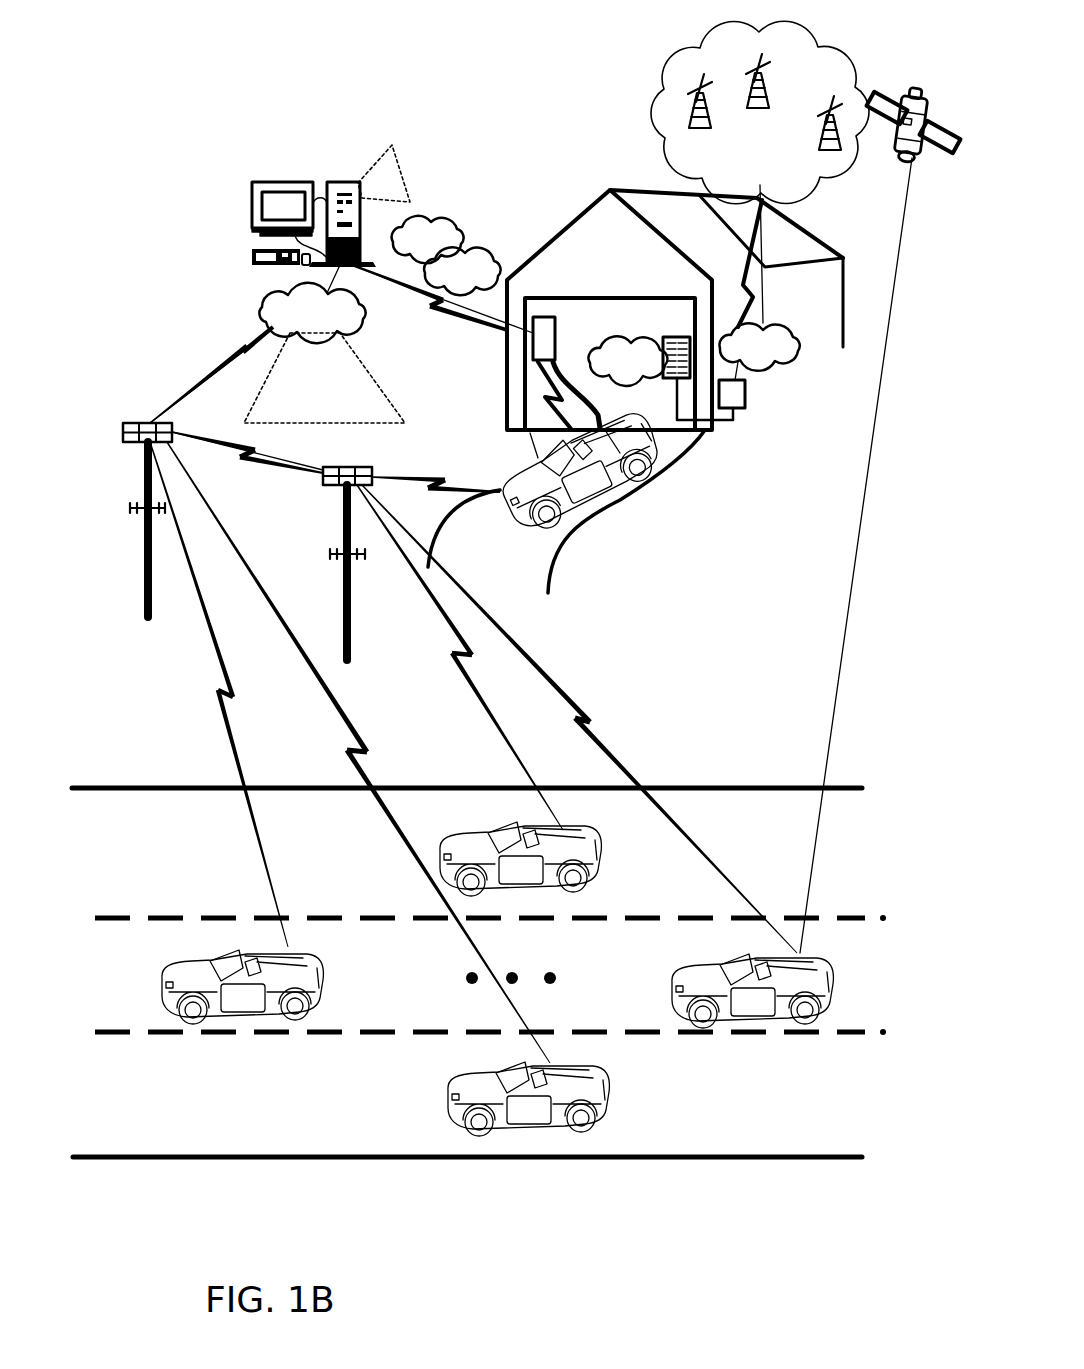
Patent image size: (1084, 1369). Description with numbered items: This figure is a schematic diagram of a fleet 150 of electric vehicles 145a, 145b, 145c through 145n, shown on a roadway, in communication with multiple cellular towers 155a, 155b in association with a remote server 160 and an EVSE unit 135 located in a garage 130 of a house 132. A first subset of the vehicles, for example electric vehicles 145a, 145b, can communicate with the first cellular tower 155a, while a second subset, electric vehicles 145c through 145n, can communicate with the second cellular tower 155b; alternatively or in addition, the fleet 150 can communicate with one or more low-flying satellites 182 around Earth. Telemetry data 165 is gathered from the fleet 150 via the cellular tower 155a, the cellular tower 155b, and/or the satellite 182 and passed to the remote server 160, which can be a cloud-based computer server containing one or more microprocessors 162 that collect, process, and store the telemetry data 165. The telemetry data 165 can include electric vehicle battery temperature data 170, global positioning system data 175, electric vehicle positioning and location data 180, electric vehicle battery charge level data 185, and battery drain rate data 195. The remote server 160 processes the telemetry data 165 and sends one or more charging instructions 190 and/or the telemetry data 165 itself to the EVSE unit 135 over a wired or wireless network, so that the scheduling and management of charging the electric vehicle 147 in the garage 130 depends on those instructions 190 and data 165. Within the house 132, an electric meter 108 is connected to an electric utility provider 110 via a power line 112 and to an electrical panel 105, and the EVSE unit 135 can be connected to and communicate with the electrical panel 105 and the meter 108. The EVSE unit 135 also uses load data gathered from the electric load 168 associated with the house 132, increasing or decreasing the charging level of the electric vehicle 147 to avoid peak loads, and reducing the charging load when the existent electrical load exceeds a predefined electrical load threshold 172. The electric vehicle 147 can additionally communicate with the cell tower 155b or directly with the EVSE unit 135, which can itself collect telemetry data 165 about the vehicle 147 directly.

The electric utility provider 110 is at (822, 46).
The low-flying satellite 182 is at (912, 90).
The remote server 160 is at (297, 183).
The microprocessor 162 is at (384, 173).
The charging instructions 190 is at (428, 239).
The telemetry data 165 is at (325, 335).
The garage 130 is at (582, 214).
The house 132 is at (722, 196).
The power line 112 is at (770, 207).
The EVSE unit 135 is at (578, 330).
The electrical panel 105 is at (665, 337).
The predefined electrical load threshold 172 is at (628, 361).
The electric load 168 is at (760, 351).
The electric meter 108 is at (741, 408).
The electric vehicle 147 is at (540, 462).
The electric vehicle battery temperature data 170 is at (324, 378).
The global positioning system (GPS) data 175 is at (324, 381).
The electric vehicle positioning and location data 180 is at (280, 406).
The electric vehicle battery charge level data 185 is at (326, 406).
The battery drain rate data 195 is at (368, 406).
The first cellular tower 155a is at (148, 468).
The second cellular tower 155b is at (345, 510).
The electric vehicle 145a is at (520, 828).
The electric vehicle 145b is at (203, 958).
The electric vehicle 145c is at (708, 962).
The electric vehicle 145n is at (492, 1072).
The fleet 150 is at (860, 1170).